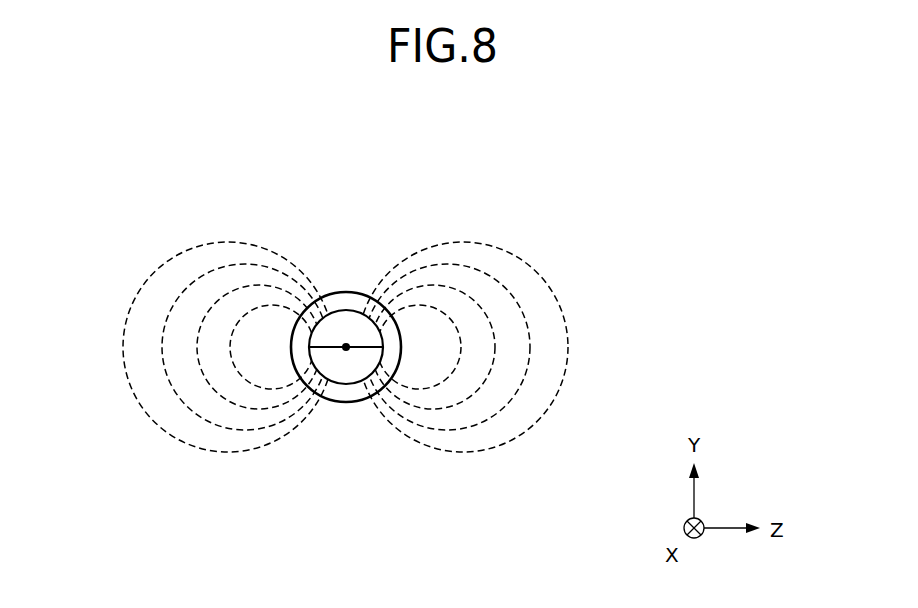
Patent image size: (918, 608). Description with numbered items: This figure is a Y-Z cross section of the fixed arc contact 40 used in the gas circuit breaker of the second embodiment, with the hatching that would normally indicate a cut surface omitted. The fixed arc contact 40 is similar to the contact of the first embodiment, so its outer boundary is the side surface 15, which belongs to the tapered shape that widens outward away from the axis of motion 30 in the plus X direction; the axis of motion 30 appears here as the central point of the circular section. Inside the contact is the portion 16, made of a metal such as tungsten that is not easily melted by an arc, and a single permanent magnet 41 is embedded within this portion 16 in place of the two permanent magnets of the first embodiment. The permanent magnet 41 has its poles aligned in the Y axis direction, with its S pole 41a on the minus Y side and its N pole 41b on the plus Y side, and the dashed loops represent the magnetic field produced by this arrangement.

The side surface 15 is at (358, 400).
The portion 16 is at (297, 355).
The axis of motion 30 is at (345, 350).
The fixed arc contact 40 is at (348, 363).
The permanent magnet 41 is at (394, 248).
The S pole 41a is at (370, 365).
The N pole 41b is at (357, 327).